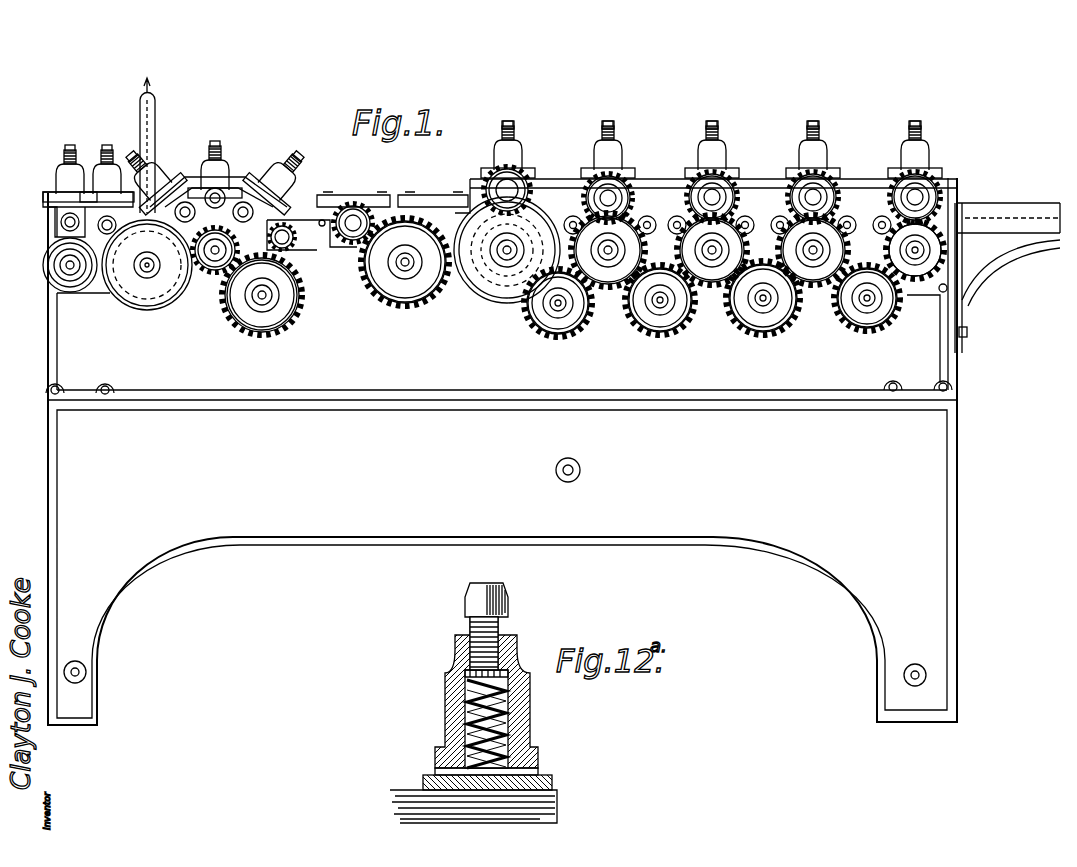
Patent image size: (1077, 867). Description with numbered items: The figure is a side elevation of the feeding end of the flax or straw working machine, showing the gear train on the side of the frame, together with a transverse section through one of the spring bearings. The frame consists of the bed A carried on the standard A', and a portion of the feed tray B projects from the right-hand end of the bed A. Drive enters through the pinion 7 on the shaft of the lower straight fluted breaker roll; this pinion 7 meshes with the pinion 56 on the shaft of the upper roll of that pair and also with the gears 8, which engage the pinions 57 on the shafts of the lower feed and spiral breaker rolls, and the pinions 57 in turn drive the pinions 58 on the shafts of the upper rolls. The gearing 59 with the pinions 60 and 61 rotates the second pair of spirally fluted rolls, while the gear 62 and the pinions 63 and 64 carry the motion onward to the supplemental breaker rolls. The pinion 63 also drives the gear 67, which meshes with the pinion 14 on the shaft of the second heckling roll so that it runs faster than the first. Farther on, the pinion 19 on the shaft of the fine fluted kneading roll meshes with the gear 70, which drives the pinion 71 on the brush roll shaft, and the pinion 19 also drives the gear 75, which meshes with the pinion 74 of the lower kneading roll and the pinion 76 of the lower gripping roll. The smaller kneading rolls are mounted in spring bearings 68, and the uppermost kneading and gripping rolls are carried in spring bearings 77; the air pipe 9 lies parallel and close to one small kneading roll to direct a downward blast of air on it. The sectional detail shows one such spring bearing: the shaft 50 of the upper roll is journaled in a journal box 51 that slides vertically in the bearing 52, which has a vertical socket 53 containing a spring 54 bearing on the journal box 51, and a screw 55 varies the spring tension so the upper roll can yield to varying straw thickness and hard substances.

In FIG. 1, the pinion 7 is at (812, 287).
In FIG. 1, the gears 8 is at (772, 313).
In FIG. 1, the air pipe 9 is at (152, 126).
In FIG. 1, the pinion 14 is at (348, 246).
In FIG. 1, the pinion 19 is at (220, 258).
In FIG. 1, the shaft 50 is at (614, 198).
In FIG. 12A, the shaft 50 is at (557, 793).
In FIG. 12A, the journal box 51 is at (547, 778).
In FIG. 1, the bearing 52 is at (493, 158).
In FIG. 12A, the bearing 52 is at (533, 703).
In FIG. 12A, the vertical socket 53 is at (490, 772).
In FIG. 12A, the spring 54 is at (463, 712).
In FIG. 1, the screw 55 is at (505, 133).
In FIG. 12A, the screw 55 is at (500, 623).
In FIG. 1, the pinion 56 is at (818, 198).
In FIG. 1, the pinions 57 is at (713, 270).
In FIG. 1, the pinions 58 is at (716, 196).
In FIG. 1, the gearing 59 is at (665, 320).
In FIG. 1, the pinion 60 is at (612, 298).
In FIG. 1, the pinion 61 is at (612, 196).
In FIG. 1, the gear 62 is at (563, 327).
In FIG. 1, the pinion 63 is at (538, 213).
In FIG. 1, the pinion 64 is at (513, 180).
In FIG. 1, the gear 67 is at (422, 290).
In FIG. 1, the spring bearings 68 is at (160, 180).
In FIG. 1, the gear 70 is at (280, 315).
In FIG. 1, the pinion 71 is at (283, 232).
In FIG. 1, the pinion 74 is at (60, 237).
In FIG. 1, the gear 75 is at (147, 296).
In FIG. 1, the pinion 76 is at (67, 280).
In FIG. 1, the spring bearings 77 is at (65, 180).
In FIG. 1, the bed A is at (486, 352).
In FIG. 1, the standard A' is at (479, 468).
In FIG. 1, the feed tray B is at (985, 248).